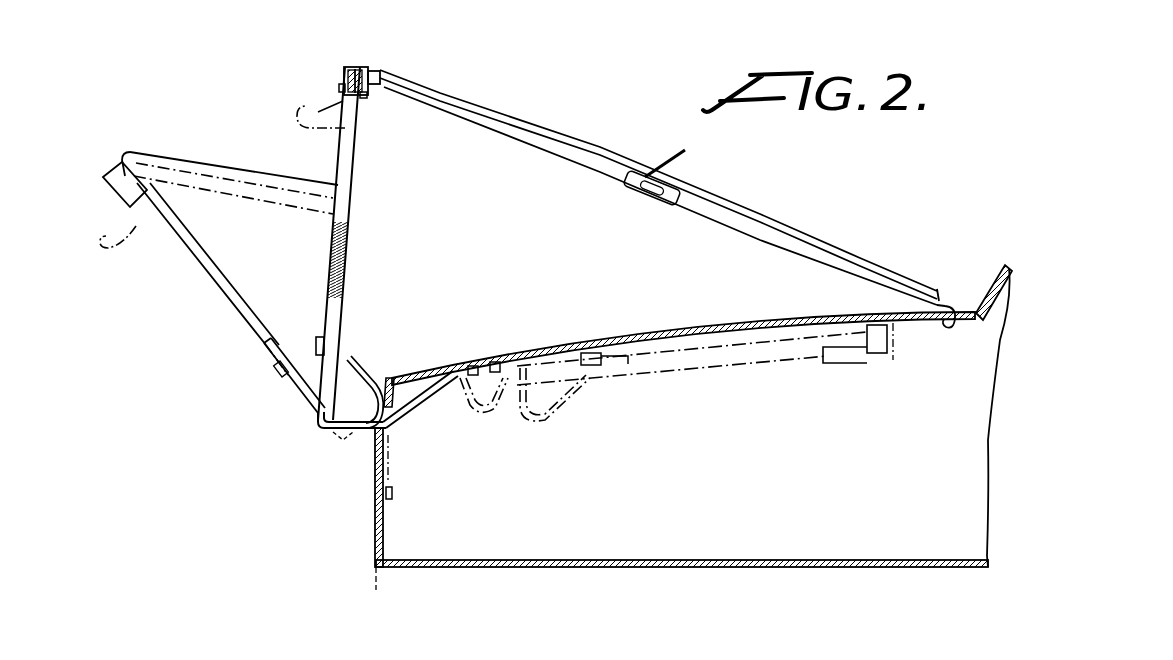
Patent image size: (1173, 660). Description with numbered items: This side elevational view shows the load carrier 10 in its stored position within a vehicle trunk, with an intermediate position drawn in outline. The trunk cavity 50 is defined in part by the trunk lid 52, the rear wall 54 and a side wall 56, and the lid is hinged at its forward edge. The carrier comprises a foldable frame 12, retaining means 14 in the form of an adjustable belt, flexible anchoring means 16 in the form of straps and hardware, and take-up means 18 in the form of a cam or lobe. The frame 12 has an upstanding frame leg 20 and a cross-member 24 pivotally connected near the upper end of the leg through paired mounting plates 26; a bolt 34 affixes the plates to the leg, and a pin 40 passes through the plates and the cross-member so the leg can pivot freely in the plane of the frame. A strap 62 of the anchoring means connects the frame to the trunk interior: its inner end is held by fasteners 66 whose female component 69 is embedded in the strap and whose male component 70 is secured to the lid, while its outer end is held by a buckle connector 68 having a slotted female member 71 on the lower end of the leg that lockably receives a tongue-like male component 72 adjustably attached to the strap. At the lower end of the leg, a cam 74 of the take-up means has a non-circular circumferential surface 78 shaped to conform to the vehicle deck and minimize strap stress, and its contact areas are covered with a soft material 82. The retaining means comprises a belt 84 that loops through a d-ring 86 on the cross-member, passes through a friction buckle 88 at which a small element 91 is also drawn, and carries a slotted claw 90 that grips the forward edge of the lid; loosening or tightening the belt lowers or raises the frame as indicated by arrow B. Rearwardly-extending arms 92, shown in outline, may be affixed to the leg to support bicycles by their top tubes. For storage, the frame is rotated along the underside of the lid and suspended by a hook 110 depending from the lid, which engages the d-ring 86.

The load carrier 10 is at (357, 250).
The foldable frame 12 is at (365, 149).
The retaining means 14 is at (752, 203).
The flexible anchoring means 16 is at (413, 412).
The take-up means 18 is at (312, 430).
The frame leg 20 is at (208, 282).
The cross-member 24 is at (355, 67).
The mounting plates 26 is at (340, 88).
The bolt 34 is at (324, 108).
The pin 40 is at (346, 72).
The trunk cavity 50 is at (753, 533).
The trunk lid 52 is at (693, 330).
The rear wall 54 is at (375, 549).
The side wall 56 is at (667, 515).
The strap 62 is at (350, 405).
The fasteners 66 is at (484, 392).
The buckle connector 68 is at (312, 340).
The female component 69 is at (474, 365).
The male component 70 is at (468, 382).
The slotted female member 71 is at (311, 349).
The male component 72 is at (312, 370).
The cam 74 is at (358, 388).
The circumferential surface 78 is at (345, 372).
The soft material 82 is at (358, 375).
The belt 84 is at (178, 153).
The d-ring 86 is at (383, 71).
The friction buckle 88 is at (628, 176).
The slotted claw 90 is at (958, 327).
The pin 91 is at (660, 160).
The rearwardly-extending arms 92 is at (336, 135).
The hook 110 is at (881, 363).
The arrow B is at (253, 113).